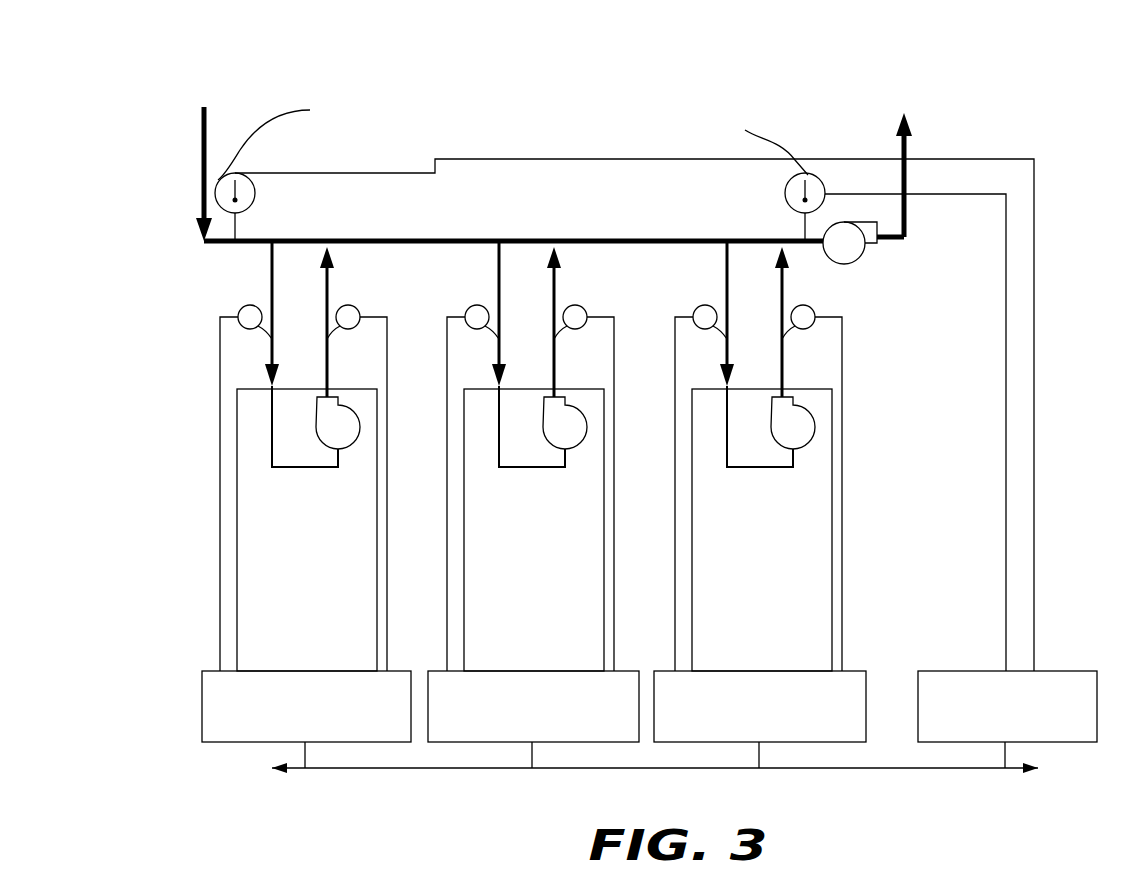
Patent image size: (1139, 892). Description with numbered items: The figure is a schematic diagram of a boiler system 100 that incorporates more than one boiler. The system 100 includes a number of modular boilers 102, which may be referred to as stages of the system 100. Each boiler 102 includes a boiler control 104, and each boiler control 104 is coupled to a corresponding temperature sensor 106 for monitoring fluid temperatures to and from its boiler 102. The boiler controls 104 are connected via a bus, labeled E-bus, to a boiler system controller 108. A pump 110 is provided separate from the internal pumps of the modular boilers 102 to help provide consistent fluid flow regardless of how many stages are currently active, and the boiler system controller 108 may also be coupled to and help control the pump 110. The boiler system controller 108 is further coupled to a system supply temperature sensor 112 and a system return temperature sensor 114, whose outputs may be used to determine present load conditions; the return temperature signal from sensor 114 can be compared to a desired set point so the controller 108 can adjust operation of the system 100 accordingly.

The boiler system 100 is at (547, 85).
The modular boiler 102 is at (347, 393).
The boiler control 104 is at (270, 728).
The temperature sensor 106 is at (250, 305).
The boiler system controller 108 is at (980, 735).
The pump 110 is at (848, 253).
The system supply temperature sensor 112 is at (806, 178).
The system return temperature sensor 114 is at (246, 195).